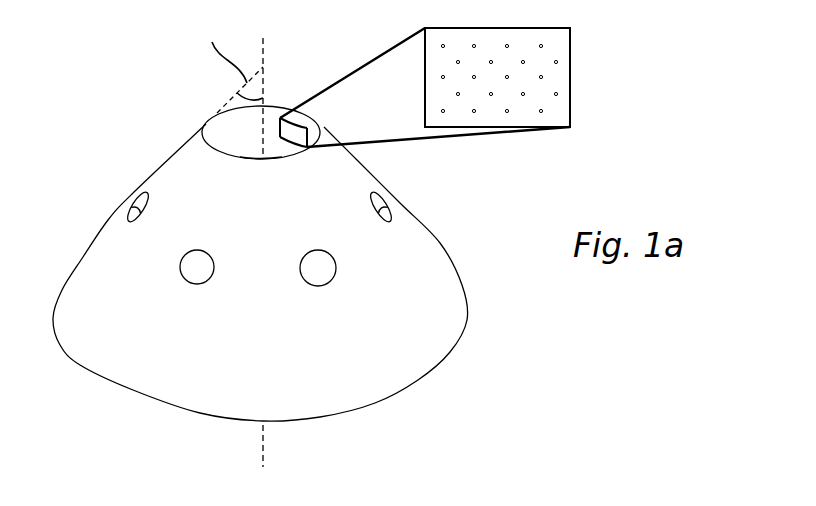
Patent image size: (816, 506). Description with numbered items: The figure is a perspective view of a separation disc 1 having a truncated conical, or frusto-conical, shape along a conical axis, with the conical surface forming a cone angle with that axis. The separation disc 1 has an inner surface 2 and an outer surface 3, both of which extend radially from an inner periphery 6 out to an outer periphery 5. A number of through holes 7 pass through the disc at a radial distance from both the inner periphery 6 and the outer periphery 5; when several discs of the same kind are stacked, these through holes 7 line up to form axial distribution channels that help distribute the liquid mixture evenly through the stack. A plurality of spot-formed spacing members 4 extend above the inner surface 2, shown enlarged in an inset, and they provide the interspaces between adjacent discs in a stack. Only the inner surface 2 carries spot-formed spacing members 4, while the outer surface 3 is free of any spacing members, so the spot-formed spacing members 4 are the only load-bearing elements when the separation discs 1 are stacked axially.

The separation disc 1 is at (105, 70).
The inner surface 2 is at (218, 128).
The outer surface 3 is at (84, 257).
The spot-formed spacing members 4 is at (557, 97).
The outer periphery 5 is at (418, 378).
The inner periphery 6 is at (297, 155).
The through holes 7 is at (331, 271).